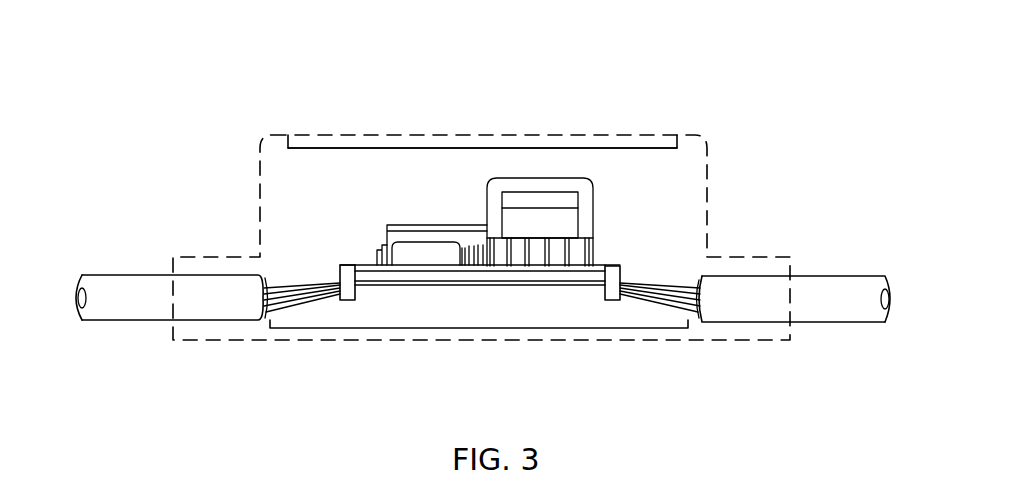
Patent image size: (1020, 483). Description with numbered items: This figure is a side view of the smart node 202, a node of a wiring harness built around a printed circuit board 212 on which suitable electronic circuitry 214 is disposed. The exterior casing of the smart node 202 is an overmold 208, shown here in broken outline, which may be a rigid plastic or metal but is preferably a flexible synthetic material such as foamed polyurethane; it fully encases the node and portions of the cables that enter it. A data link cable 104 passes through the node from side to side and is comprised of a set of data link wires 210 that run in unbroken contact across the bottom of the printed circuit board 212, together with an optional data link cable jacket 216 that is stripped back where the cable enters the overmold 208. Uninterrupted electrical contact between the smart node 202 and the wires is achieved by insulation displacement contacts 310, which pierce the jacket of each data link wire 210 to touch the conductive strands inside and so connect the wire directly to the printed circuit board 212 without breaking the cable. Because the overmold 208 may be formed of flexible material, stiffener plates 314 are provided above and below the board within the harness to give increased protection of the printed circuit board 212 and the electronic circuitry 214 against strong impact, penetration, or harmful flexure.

The data link cable 104 is at (115, 273).
The smart node 202 is at (730, 114).
The overmold 208 is at (420, 135).
The data link wires 210 is at (296, 298).
The printed circuit board 212 is at (367, 264).
The electronic circuitry 214 is at (527, 177).
The data link cable jacket 216 is at (135, 308).
The insulation displacement contact 310 is at (357, 290).
The stiffener plates 314 is at (613, 148).